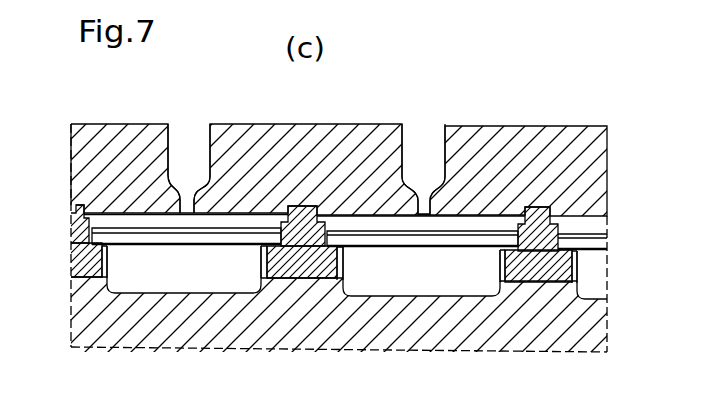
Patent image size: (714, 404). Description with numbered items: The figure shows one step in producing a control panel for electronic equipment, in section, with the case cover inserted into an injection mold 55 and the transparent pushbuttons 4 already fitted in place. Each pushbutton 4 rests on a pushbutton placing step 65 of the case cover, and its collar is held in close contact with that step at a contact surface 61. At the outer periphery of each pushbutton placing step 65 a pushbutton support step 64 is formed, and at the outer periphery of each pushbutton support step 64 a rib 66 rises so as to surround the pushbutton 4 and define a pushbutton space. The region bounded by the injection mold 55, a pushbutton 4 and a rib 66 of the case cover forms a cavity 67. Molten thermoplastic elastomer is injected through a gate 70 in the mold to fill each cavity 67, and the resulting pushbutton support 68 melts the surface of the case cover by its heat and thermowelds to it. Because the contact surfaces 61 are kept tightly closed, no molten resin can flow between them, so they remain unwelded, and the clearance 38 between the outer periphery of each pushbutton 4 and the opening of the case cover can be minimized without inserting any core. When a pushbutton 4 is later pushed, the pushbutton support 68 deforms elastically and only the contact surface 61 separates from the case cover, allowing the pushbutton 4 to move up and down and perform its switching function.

The pushbutton 4 is at (195, 285).
The clearance 38 is at (100, 275).
The injection mold 55 is at (483, 114).
The contact surface 61 is at (330, 245).
The pushbutton support step 64 is at (84, 194).
The pushbutton placing step 65 is at (86, 238).
The rib 66 is at (75, 214).
The cavity 67 is at (230, 218).
The pushbutton support 68 is at (116, 211).
The gate 70 is at (180, 201).